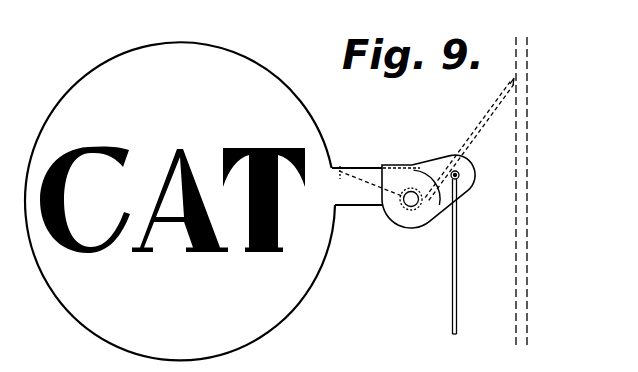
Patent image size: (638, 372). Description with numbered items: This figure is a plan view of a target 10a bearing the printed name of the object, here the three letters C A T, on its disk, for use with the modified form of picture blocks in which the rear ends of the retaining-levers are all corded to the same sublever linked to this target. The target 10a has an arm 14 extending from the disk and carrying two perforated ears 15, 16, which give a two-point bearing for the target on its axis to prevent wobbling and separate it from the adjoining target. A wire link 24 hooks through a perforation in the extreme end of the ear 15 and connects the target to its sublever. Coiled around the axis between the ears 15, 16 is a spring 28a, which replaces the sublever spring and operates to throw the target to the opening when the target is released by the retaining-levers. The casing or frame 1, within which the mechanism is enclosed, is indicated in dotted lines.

The casing or frame 1 is at (521, 208).
The target 10a is at (212, 291).
The arm 14 is at (350, 172).
The perforated ear 15 is at (440, 164).
The perforated ear 16 is at (395, 212).
The wire link 24 is at (457, 260).
The spring 28a is at (494, 119).